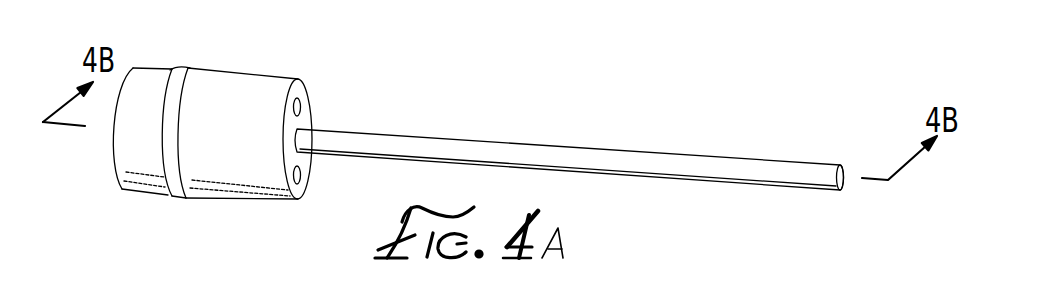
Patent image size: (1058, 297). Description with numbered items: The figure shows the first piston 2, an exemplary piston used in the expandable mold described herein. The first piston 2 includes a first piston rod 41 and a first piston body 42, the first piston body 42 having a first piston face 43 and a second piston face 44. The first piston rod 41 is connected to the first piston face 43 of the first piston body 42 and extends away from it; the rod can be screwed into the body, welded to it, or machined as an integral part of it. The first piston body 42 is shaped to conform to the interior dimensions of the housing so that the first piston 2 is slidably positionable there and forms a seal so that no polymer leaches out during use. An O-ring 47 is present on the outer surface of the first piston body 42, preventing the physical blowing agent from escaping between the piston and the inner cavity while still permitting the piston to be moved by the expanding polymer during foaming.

The first piston 2 is at (510, 83).
The first piston rod 41 is at (745, 172).
The first piston body 42 is at (247, 100).
The first piston face 43 is at (306, 113).
The second piston face 44 is at (113, 153).
The O-ring 47 is at (165, 103).